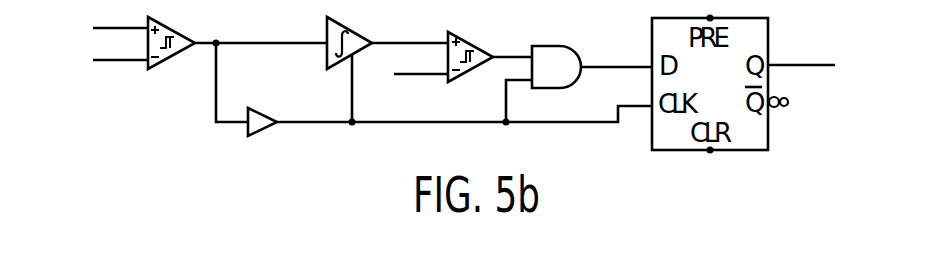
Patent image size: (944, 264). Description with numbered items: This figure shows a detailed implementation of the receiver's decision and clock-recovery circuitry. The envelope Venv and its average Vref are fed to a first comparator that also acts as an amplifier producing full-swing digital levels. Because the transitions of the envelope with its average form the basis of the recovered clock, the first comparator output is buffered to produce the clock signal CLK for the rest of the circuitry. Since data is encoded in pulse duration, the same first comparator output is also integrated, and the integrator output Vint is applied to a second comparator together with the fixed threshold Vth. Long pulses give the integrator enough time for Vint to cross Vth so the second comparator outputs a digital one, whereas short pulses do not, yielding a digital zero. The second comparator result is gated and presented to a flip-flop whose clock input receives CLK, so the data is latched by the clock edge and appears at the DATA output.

The envelope signal Venv is at (111, 14).
The reference (average) voltage Vref is at (113, 44).
The integrator output Vint is at (410, 27).
The threshold voltage Vth is at (421, 59).
The clock signal CLK is at (579, 105).
The data output DATA is at (801, 49).